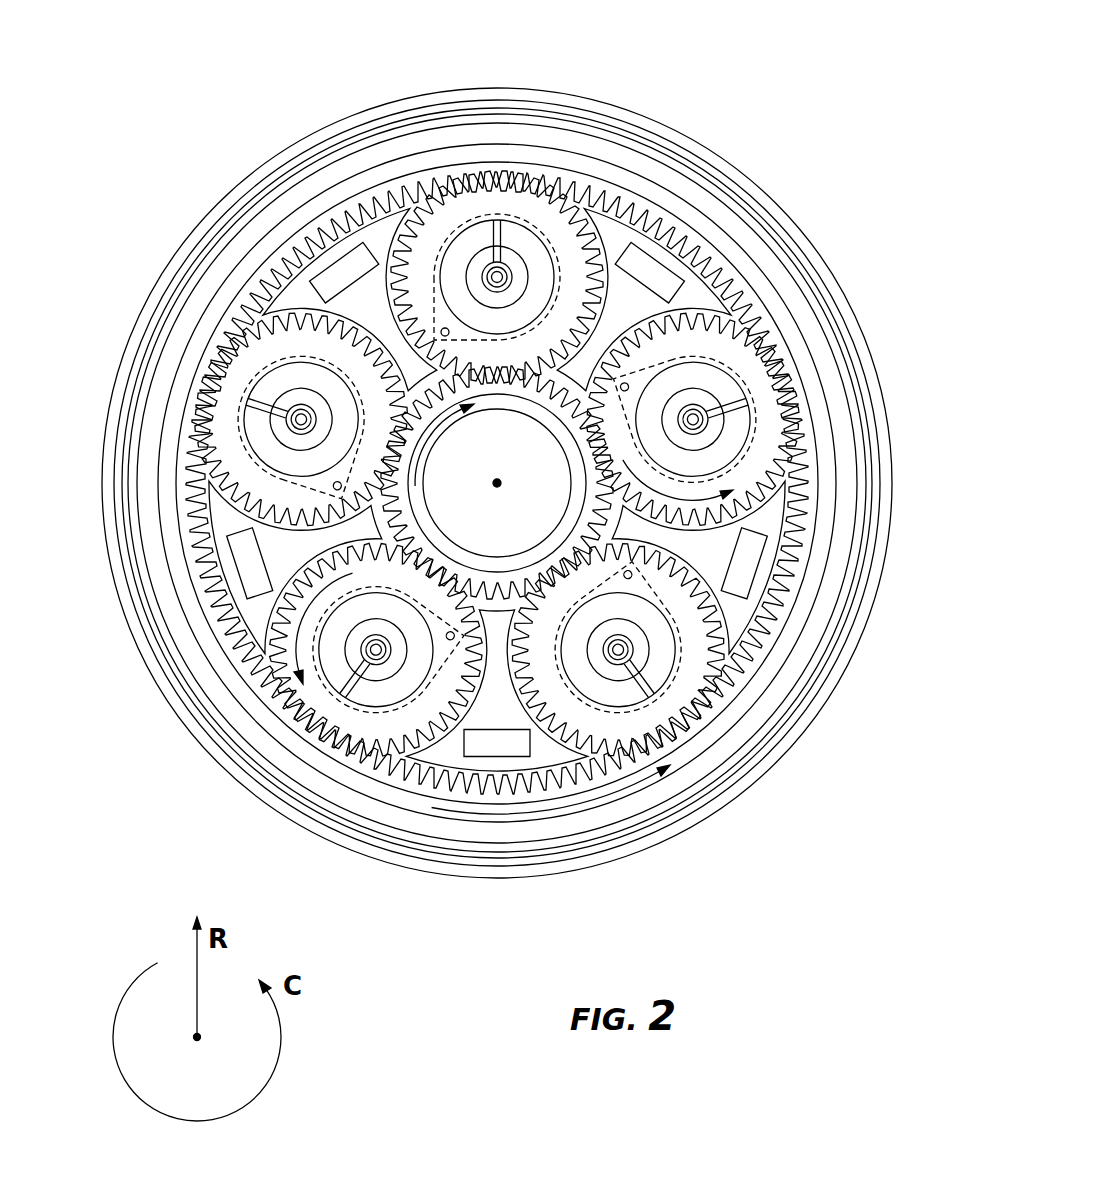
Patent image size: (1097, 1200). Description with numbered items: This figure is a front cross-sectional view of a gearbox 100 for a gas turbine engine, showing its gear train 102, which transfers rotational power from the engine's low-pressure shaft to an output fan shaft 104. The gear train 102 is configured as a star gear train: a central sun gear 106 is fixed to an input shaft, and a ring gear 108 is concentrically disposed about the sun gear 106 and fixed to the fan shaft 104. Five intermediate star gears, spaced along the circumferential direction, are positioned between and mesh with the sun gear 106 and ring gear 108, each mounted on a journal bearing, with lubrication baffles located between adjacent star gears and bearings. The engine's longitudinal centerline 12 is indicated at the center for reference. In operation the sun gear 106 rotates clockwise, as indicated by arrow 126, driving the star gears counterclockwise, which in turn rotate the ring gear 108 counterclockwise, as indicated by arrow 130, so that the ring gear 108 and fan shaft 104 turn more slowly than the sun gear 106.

The gearbox 100 is at (173, 163).
The gear train 102 is at (615, 165).
The fan shaft 104 is at (737, 257).
The sun gear 106 is at (390, 540).
The ring gear 108 is at (773, 333).
The longitudinal centerline 12 is at (499, 489).
The arrow 126 is at (428, 452).
The arrow 130 is at (583, 803).